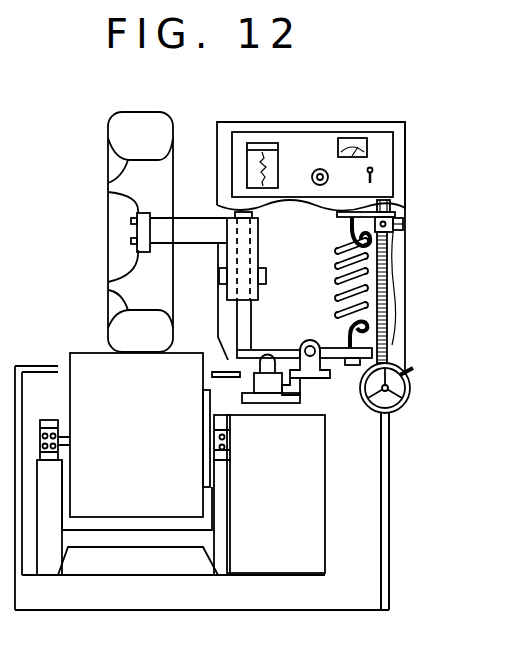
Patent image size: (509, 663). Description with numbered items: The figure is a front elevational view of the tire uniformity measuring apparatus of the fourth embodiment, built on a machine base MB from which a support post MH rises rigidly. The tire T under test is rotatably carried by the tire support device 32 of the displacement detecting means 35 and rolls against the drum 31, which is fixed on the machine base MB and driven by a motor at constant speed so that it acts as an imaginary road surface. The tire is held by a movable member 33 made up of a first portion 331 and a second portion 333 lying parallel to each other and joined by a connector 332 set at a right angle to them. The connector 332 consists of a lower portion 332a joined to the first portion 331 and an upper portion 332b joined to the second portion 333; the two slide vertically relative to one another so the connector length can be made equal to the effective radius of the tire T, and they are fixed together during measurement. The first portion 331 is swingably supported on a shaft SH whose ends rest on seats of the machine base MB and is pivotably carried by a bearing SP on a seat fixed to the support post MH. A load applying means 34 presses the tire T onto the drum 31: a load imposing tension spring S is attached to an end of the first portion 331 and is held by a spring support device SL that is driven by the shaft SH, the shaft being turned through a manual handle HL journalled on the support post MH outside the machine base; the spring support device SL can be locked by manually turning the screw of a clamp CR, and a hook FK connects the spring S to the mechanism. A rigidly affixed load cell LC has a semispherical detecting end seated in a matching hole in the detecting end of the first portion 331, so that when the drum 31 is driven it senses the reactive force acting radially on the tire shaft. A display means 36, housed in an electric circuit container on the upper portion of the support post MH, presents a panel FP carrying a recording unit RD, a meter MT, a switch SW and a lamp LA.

The tire T is at (138, 120).
The displacement detecting means 35 is at (106, 247).
The tire support device 32 is at (132, 220).
The second portion 333 is at (195, 216).
The connector 332 is at (268, 287).
The upper portion 332b is at (247, 260).
The lower portion 332a is at (246, 326).
The movable member 33 is at (256, 348).
The first portion 331 is at (337, 358).
The drum 31 is at (90, 368).
The display means 36 is at (338, 100).
The panel FP is at (309, 150).
The recording unit RD is at (262, 143).
The meter MT is at (355, 138).
The lamp LA is at (328, 177).
The switch SW is at (376, 178).
The spring support device SL is at (397, 214).
The clamp CR is at (406, 226).
The load imposing tension spring S is at (363, 292).
The hook FK is at (358, 338).
The shaft SH is at (395, 360).
The manual handle HL is at (410, 393).
The load applying means 34 is at (424, 311).
The load cell LC is at (267, 382).
The bearing SP is at (312, 360).
The support post MH is at (353, 535).
The machine base MB is at (147, 585).